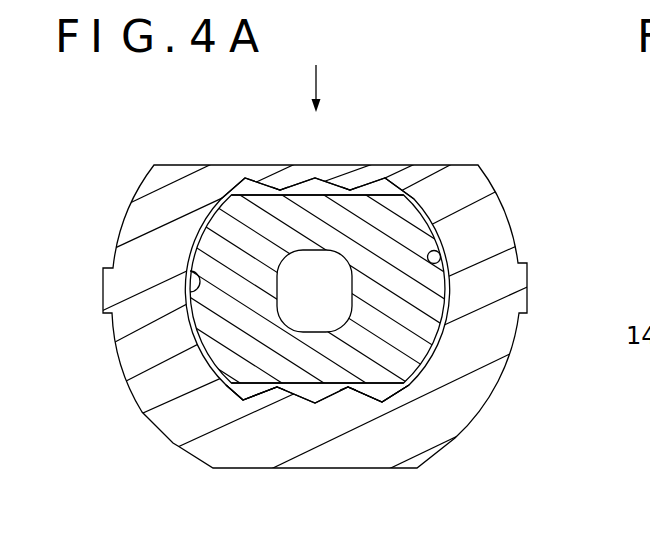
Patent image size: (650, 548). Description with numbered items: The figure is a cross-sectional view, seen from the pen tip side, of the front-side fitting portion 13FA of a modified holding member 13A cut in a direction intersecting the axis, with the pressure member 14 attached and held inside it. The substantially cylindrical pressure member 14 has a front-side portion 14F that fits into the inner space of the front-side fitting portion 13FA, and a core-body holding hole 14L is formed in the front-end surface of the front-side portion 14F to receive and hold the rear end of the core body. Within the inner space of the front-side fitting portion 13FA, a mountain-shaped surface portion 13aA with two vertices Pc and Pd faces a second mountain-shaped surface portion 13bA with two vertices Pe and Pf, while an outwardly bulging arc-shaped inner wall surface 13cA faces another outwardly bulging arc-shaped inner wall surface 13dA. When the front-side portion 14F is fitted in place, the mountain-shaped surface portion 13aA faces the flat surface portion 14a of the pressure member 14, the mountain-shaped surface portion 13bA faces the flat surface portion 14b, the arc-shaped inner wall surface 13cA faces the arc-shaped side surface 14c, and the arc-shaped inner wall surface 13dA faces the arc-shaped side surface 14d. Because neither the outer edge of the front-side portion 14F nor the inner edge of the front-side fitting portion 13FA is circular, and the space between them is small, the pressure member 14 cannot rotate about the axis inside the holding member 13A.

The holding member 13A is at (510, 353).
The front-side fitting portion 13FA is at (345, 326).
The mountain-shaped surface portion 13aA is at (362, 188).
The mountain-shaped surface portion 13bA is at (370, 400).
The arc-shaped inner wall surface 13cA is at (225, 360).
The arc-shaped inner wall surface 13dA is at (398, 378).
The pressure member 14 is at (214, 265).
The front-side portion 14F is at (254, 298).
The flat surface portion 14a is at (257, 191).
The flat surface portion 14b is at (253, 390).
The arc-shaped side surface 14c is at (187, 267).
The arc-shaped side surface 14d is at (438, 250).
The core-body holding hole 14L is at (292, 303).
The vertex Pc is at (280, 190).
The vertex Pd is at (351, 190).
The vertex Pe is at (277, 390).
The vertex Pf is at (347, 390).